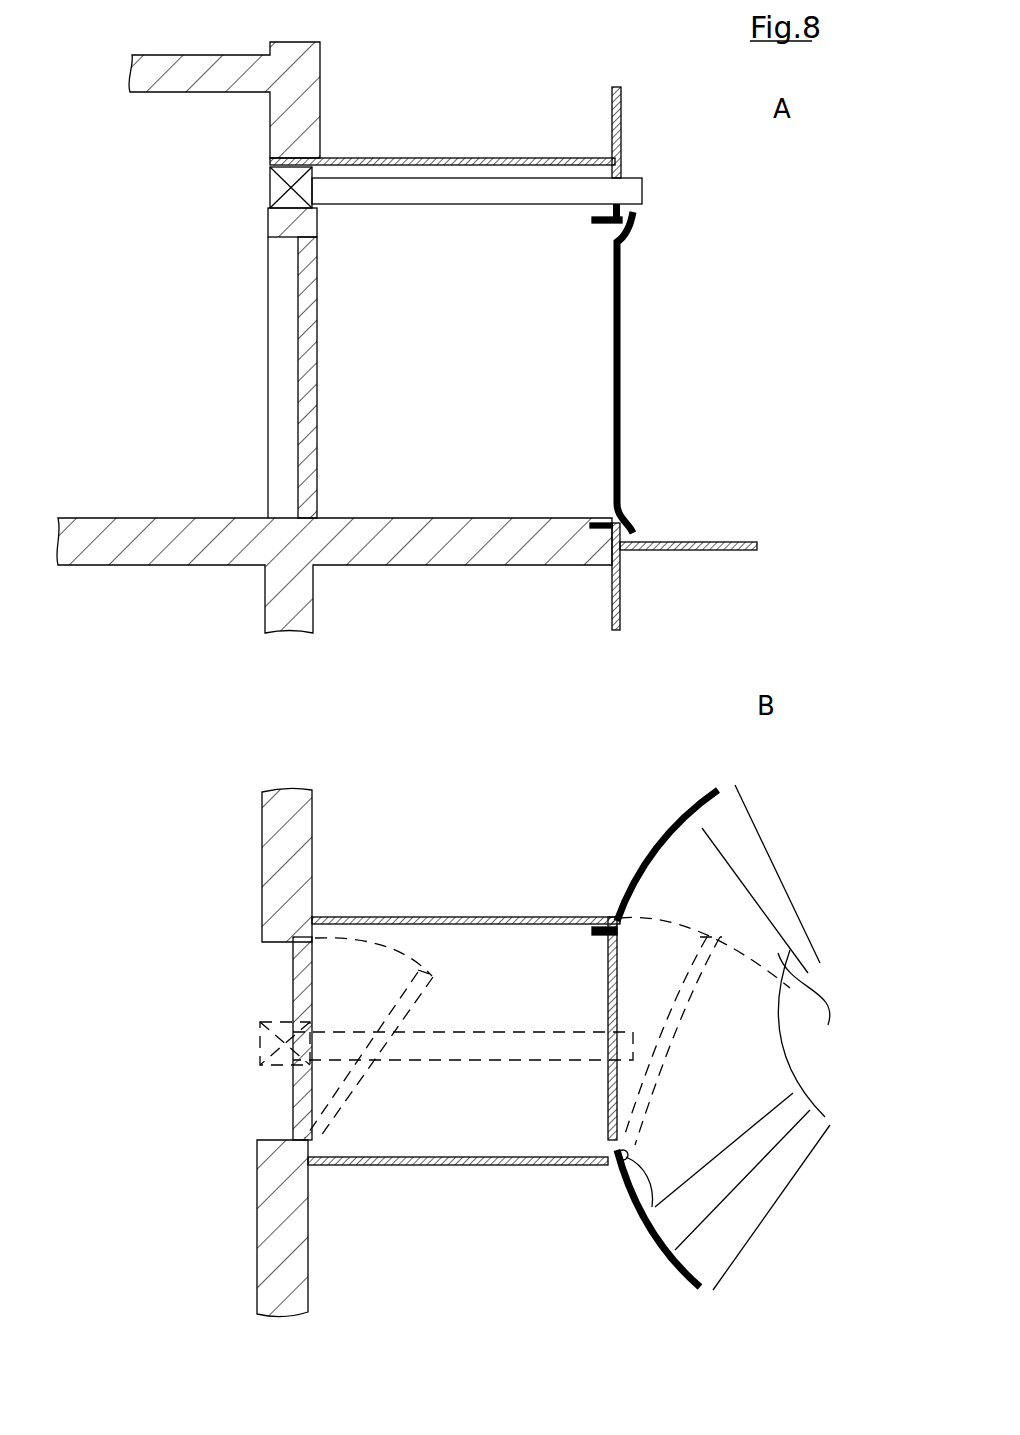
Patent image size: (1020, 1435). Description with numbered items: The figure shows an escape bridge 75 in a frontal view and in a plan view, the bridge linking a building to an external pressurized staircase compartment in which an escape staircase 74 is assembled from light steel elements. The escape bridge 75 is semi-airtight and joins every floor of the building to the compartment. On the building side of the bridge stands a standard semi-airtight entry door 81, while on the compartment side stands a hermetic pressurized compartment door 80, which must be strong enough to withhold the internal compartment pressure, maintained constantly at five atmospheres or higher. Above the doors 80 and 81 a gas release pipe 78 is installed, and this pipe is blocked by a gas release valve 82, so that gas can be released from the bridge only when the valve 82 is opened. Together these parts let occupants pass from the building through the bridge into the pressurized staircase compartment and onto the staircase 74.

In FIG. 8B, the escape staircase 74 is at (757, 1113).
In FIG. 8A, the escape bridge 75 is at (513, 354).
In FIG. 8B, the escape bridge 75 is at (464, 1041).
In FIG. 8A, the gas release pipe 78 is at (583, 198).
In FIG. 8B, the gas release pipe 78 is at (563, 1043).
In FIG. 8A, the hermetic pressurized compartment door 80 is at (620, 352).
In FIG. 8B, the hermetic pressurized compartment door 80 is at (615, 975).
In FIG. 8A, the semi-airtight entry door 81 is at (305, 315).
In FIG. 8B, the semi-airtight entry door 81 is at (293, 980).
In FIG. 8A, the gas release valve 82 is at (283, 190).
In FIG. 8B, the gas release valve 82 is at (272, 1049).